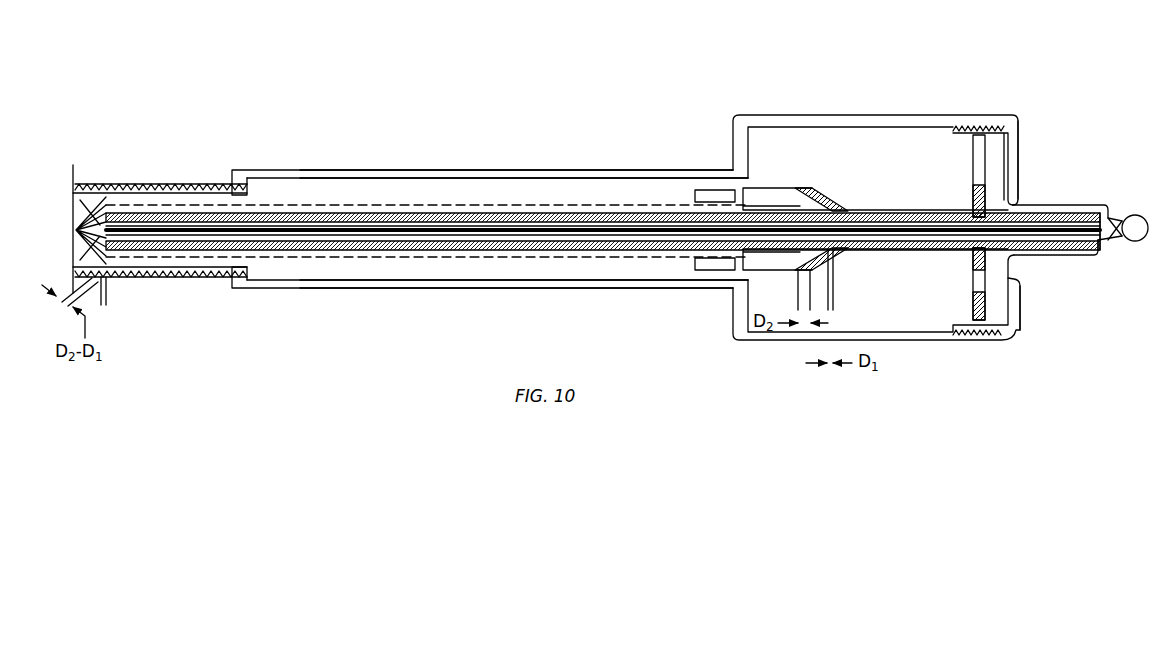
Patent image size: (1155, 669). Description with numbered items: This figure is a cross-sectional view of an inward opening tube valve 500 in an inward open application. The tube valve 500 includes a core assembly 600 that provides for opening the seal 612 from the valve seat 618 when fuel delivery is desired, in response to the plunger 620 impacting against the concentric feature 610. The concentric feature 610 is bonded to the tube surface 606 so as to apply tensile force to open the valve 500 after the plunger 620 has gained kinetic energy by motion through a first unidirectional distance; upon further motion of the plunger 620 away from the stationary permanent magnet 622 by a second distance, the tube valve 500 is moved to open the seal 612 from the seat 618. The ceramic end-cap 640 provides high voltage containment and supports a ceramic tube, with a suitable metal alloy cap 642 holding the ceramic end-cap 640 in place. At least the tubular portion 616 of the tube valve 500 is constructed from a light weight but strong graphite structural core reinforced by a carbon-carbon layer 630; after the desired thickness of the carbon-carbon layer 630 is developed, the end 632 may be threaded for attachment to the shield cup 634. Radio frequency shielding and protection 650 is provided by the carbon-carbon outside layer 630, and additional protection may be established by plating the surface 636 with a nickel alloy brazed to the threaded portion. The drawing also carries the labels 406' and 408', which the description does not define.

The inward opening tube valve 500 is at (146, 56).
The core assembly 600 is at (388, 213).
The tube surface 606 is at (263, 188).
The concentric feature 610 is at (836, 212).
The seal 612 is at (118, 186).
The tubular portion 616 is at (262, 297).
The valve seat 618 is at (96, 188).
The plunger 620 is at (780, 192).
The stationary permanent magnet 622 is at (697, 272).
The carbon-carbon layer 630 is at (478, 289).
The end 632 is at (740, 170).
The shield cup 634 is at (753, 116).
The surface 636 is at (520, 170).
The ceramic end-cap 640 is at (1012, 205).
The metal alloy cap 642 is at (987, 132).
The radio frequency shielding and protection 650 is at (993, 314).
The first connector portion 406' is at (1058, 148).
The second connector portion 408' is at (1098, 275).